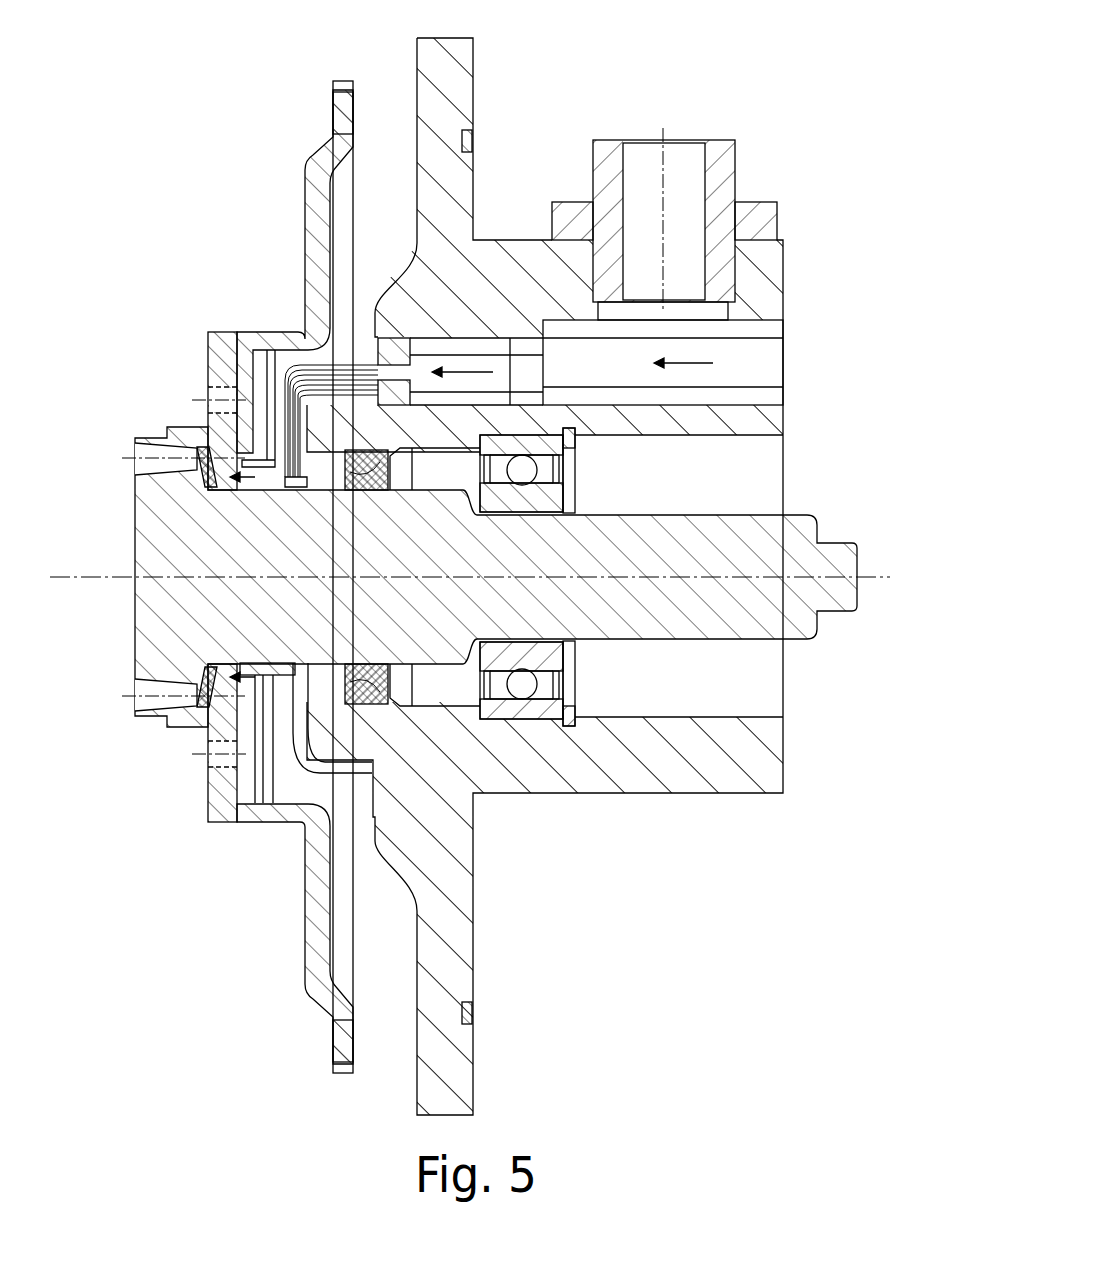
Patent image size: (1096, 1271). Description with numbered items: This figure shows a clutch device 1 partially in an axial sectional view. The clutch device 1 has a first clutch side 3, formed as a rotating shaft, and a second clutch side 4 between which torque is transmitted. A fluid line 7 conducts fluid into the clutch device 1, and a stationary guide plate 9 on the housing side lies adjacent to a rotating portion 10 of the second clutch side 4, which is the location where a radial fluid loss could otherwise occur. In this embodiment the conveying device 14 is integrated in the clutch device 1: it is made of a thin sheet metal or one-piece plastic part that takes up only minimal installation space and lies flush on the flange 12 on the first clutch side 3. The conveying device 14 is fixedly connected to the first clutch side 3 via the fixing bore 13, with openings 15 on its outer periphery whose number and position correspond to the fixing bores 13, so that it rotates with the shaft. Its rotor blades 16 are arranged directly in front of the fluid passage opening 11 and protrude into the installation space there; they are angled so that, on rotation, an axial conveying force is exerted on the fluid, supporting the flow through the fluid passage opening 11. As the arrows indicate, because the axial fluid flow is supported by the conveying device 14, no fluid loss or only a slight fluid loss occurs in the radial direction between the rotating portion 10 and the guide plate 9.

The clutch device 1 is at (750, 106).
The first clutch side 3 is at (125, 512).
The second clutch side 4 is at (317, 157).
The fluid line 7 is at (757, 363).
The guide plate 9 is at (300, 365).
The rotating portion 10 is at (303, 192).
The fluid passage opening 11 is at (135, 700).
The flange 12 is at (227, 770).
The fixing bore 13 is at (215, 388).
The conveying device 14 is at (233, 783).
The openings 15 is at (230, 370).
The rotor blades 16 is at (200, 664).